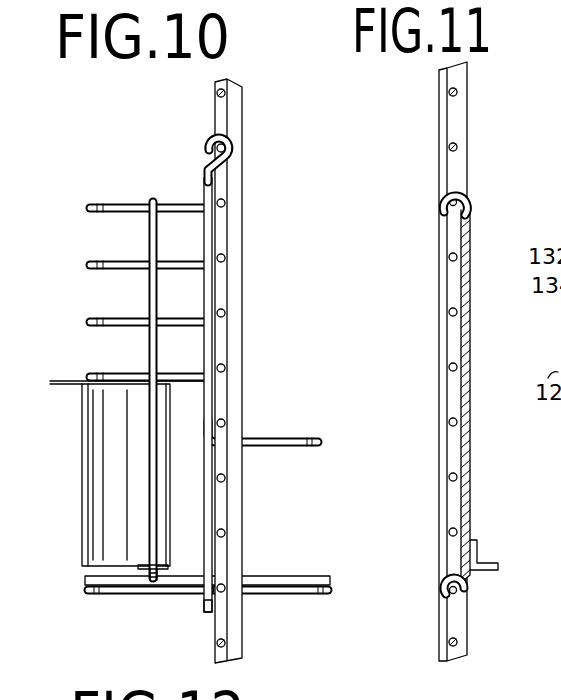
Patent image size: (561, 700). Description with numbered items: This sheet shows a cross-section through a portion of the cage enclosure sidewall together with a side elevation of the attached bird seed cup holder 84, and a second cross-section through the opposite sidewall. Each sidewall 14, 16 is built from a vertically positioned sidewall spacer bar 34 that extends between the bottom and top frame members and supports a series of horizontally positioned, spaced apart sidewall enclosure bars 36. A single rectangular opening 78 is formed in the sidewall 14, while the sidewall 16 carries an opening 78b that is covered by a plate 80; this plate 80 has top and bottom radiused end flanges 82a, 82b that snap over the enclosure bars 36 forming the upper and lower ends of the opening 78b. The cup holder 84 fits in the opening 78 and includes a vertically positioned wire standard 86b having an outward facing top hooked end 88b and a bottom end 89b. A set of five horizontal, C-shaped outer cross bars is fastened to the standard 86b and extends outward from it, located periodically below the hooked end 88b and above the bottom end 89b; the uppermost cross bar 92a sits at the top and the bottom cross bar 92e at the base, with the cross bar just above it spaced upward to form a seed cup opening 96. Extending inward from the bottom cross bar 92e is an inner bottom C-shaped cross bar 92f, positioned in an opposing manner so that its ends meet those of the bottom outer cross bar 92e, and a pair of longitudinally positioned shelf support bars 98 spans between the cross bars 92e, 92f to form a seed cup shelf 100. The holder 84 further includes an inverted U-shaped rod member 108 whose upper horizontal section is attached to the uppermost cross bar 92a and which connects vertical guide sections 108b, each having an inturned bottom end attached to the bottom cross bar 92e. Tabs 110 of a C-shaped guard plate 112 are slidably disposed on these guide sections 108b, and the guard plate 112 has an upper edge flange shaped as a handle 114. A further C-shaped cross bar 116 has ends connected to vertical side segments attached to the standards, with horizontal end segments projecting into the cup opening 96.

In FIG. 10, the sidewall 14 is at (214, 110).
In FIG. 11, the sidewall 16 is at (460, 170).
In FIG. 10, the sidewall spacer bar 34 is at (232, 104).
In FIG. 11, the sidewall spacer bar 34 is at (440, 366).
In FIG. 10, the sidewall enclosure bar 36 is at (213, 153).
In FIG. 11, the sidewall enclosure bar 36 is at (457, 92).
In FIG. 10, the opening 78 is at (216, 290).
In FIG. 11, the opening 78b is at (458, 468).
In FIG. 11, the plate 80 is at (470, 326).
In FIG. 11, the top radiused end flange 82a is at (442, 200).
In FIG. 11, the bottom radiused end flange 82b is at (462, 595).
In FIG. 10, the bird seed cup holder 84 is at (78, 326).
In FIG. 10, the wire standard 86b is at (204, 244).
In FIG. 10, the top hooked end 88b is at (230, 147).
In FIG. 10, the bottom end 89b is at (205, 606).
In FIG. 10, the cross bar 92a is at (92, 207).
In FIG. 10, the bottom cross bar 92e is at (87, 594).
In FIG. 10, the inner bottom cross bar 92f is at (293, 597).
In FIG. 10, the seed cup opening 96 is at (82, 475).
In FIG. 10, the shelf support bar 98 is at (302, 578).
In FIG. 10, the seed cup shelf 100 is at (255, 577).
In FIG. 10, the inverted U-shaped rod member 108 is at (150, 200).
In FIG. 10, the vertical guide section 108b is at (152, 237).
In FIG. 10, the tab 110 is at (155, 586).
In FIG. 10, the guard plate 112 is at (103, 522).
In FIG. 10, the handle 114 is at (50, 381).
In FIG. 10, the cross bar 116 is at (282, 441).